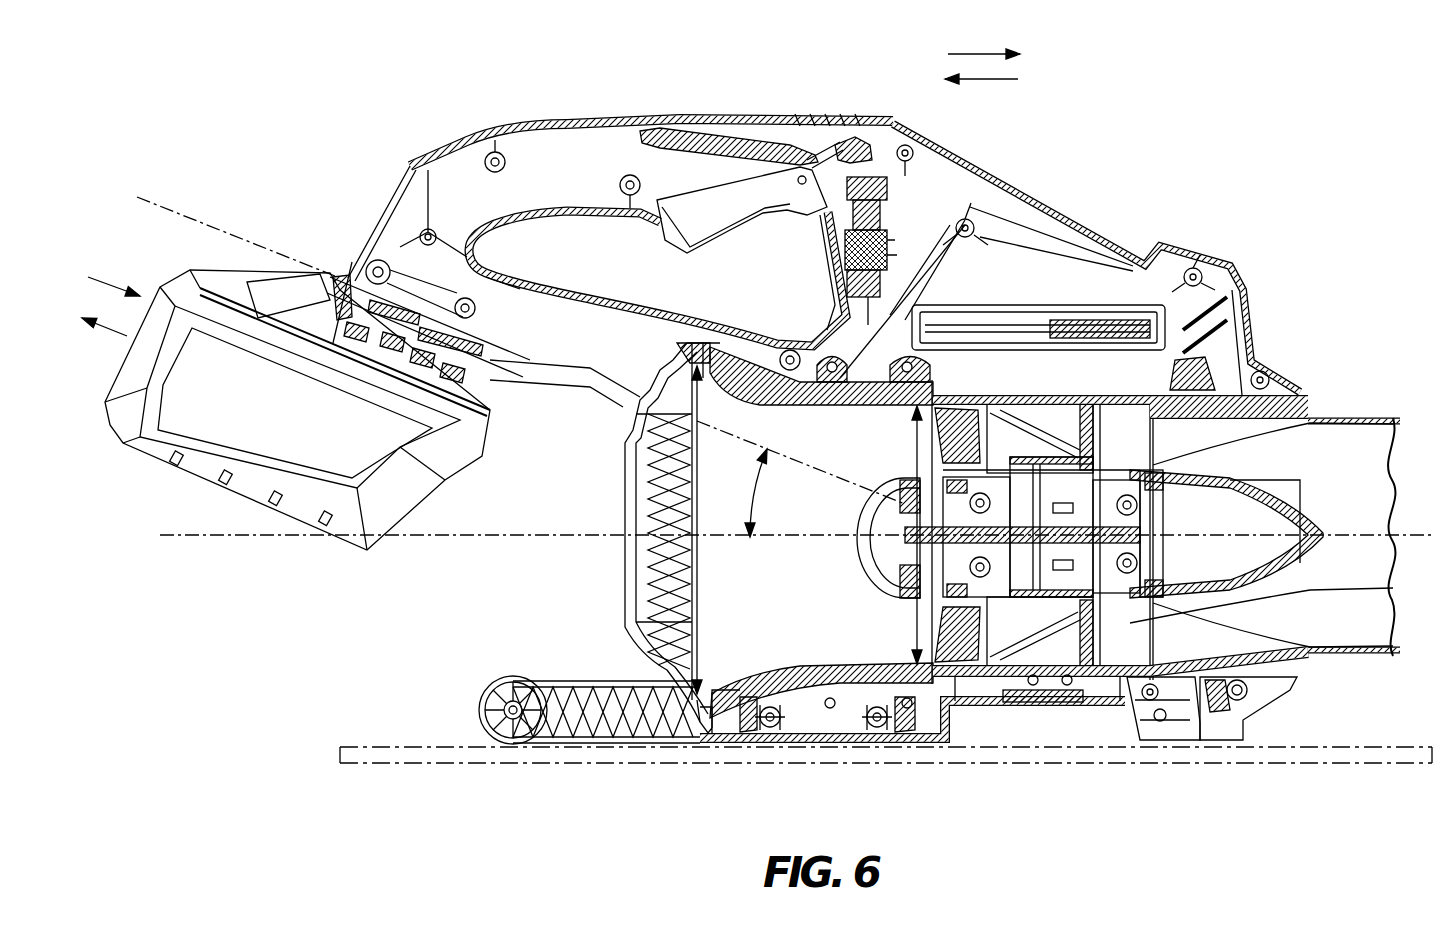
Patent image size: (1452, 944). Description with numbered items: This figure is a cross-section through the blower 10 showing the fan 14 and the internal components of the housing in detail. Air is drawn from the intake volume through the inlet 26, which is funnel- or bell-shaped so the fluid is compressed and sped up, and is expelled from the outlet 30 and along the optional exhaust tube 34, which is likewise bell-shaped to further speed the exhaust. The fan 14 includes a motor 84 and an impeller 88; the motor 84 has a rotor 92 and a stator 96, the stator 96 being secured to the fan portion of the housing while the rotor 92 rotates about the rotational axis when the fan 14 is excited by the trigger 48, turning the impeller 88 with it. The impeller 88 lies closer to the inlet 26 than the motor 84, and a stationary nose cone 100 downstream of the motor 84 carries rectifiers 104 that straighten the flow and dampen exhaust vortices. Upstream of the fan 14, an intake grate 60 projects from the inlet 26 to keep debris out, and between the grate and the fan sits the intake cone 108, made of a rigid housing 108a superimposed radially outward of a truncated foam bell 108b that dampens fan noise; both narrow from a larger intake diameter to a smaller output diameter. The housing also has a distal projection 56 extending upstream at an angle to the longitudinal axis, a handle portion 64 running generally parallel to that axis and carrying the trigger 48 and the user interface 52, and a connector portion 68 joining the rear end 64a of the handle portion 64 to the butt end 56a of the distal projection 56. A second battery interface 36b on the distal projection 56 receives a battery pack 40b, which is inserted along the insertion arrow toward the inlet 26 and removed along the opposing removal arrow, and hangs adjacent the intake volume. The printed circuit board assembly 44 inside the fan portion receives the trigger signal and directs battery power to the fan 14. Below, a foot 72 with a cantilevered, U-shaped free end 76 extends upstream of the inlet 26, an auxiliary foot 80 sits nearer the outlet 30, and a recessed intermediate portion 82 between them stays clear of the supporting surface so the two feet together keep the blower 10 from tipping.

The blower 10 is at (1314, 147).
The fan 14 is at (950, 452).
The inlet 26 is at (617, 597).
The outlet 30 is at (1322, 388).
The exhaust tube 34 is at (1352, 417).
The second battery interface 36b is at (353, 257).
The battery pack 40b is at (293, 428).
The printed circuit board assembly 44 is at (973, 305).
The trigger 48 is at (733, 197).
The user interface 52 is at (675, 122).
The distal projection 56 is at (562, 287).
The butt end 56a is at (511, 273).
The intake grate 60 is at (643, 640).
The handle portion 64 is at (587, 158).
The rear end 64a is at (397, 138).
The connector portion 68 is at (380, 203).
The foot 72 is at (752, 743).
The free end 76 is at (483, 690).
The auxiliary foot 80 is at (1195, 740).
The intermediate portion 82 is at (1090, 713).
The motor 84 is at (1053, 600).
The stator 96 is at (1022, 535).
The impeller 88 is at (958, 642).
The rotor 92 is at (1013, 620).
The nose cone 100 is at (1263, 490).
The rectifiers 104 is at (1280, 590).
The intake cone 108 is at (803, 708).
The rigid housing 108a is at (868, 748).
The truncated foam bell 108b is at (700, 707).